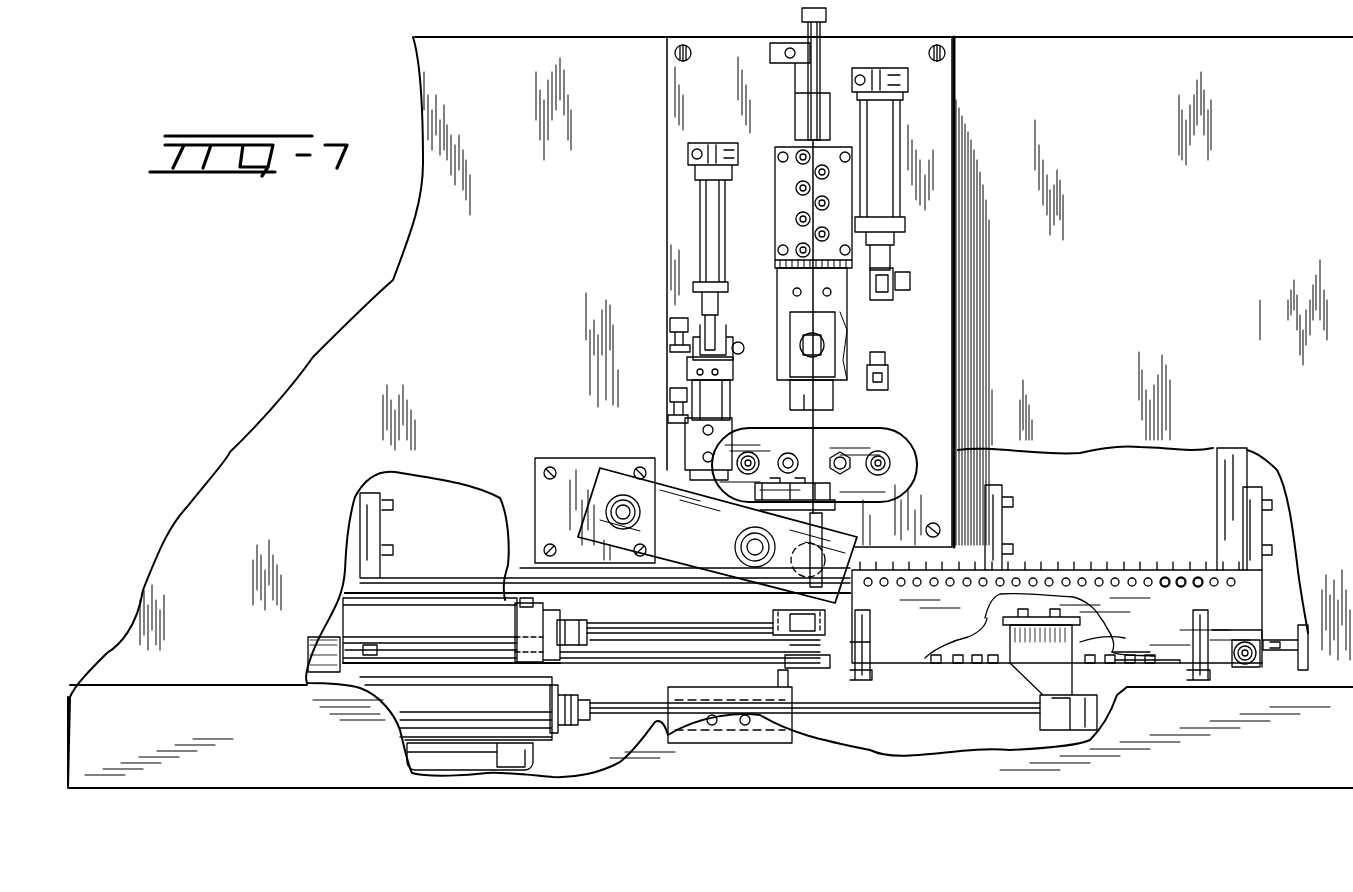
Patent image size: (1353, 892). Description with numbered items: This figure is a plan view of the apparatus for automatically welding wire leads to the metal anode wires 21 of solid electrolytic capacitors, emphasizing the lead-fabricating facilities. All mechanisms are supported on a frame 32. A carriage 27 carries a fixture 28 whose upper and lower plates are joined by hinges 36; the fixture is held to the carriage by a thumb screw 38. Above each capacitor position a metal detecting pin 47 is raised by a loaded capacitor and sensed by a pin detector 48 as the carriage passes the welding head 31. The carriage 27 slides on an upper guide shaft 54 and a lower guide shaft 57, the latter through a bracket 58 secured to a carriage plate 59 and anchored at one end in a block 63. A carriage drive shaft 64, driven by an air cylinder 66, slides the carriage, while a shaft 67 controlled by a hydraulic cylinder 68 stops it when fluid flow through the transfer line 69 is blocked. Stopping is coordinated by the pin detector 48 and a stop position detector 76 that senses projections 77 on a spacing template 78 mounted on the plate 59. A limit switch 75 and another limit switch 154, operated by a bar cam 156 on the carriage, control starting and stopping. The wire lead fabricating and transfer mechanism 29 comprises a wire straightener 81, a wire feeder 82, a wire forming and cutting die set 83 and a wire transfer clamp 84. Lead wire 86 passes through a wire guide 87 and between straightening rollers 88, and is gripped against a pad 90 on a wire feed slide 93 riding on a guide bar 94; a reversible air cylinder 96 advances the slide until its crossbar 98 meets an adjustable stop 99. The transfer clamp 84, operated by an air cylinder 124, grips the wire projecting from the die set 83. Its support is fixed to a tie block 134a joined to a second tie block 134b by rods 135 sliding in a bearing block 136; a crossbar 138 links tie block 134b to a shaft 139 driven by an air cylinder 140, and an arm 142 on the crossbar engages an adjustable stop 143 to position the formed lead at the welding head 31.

The anode wire 21 is at (1116, 567).
The carriage 27 is at (1140, 546).
The fixture 28 is at (1258, 586).
The wire lead fabricating and transfer mechanism 29 is at (655, 248).
The welding head 31 is at (838, 582).
The frame 32 is at (217, 455).
The hinges 36 is at (872, 640).
The thumb screw 38 is at (1250, 660).
The metal detecting pin 47 is at (1199, 568).
The pin detector 48 is at (826, 623).
The upper guide shaft 54 is at (420, 578).
The lower guide shaft 57 is at (638, 647).
The bracket 58 is at (1072, 680).
The carriage plate 59 is at (1092, 620).
The block 63 is at (515, 618).
The carriage drive shaft 64 is at (634, 622).
The air cylinder 66 is at (580, 622).
The shaft 67 is at (906, 714).
The hydraulic cylinder 68 is at (545, 730).
The transfer line 69 is at (427, 760).
The limit switch 75 is at (1300, 628).
The stop position detector 76 is at (691, 688).
The projections 77 is at (1133, 664).
The spacing template 78 is at (1125, 637).
The wire straightener 81 is at (775, 176).
The wire feeder 82 is at (910, 359).
The wire forming and cutting die set 83 is at (900, 445).
The wire transfer clamp 84 is at (820, 502).
The lead wire 86 is at (808, 82).
The wire guide 87 is at (828, 42).
The wire straightening rollers 88 is at (796, 219).
The pad 90 is at (816, 343).
The wire feed slide 93 is at (777, 276).
The guide bar 94 is at (833, 400).
The reversible air cylinder 96 is at (888, 130).
The crossbar 98 is at (893, 300).
The adjustable stop 99 is at (886, 358).
The air cylinder 124 is at (707, 490).
The tie block 134a is at (702, 478).
The tie block 134b is at (733, 373).
The rods 135 is at (718, 412).
The bearing block 136 is at (690, 436).
The crossbar 138 is at (740, 354).
The shaft 139 is at (706, 312).
The air cylinder 140 is at (703, 208).
The arm 142 is at (688, 355).
The adjustable stop 143 is at (672, 391).
The limit switch 154 is at (350, 636).
The bar cam 156 is at (800, 663).